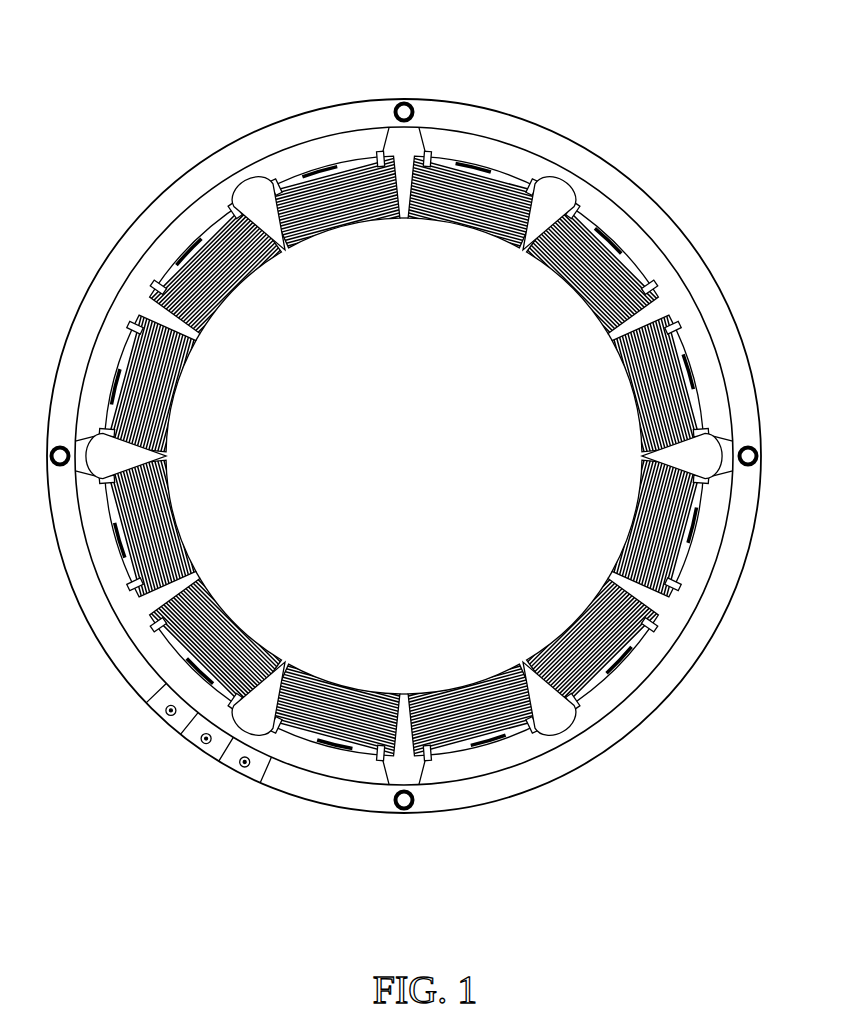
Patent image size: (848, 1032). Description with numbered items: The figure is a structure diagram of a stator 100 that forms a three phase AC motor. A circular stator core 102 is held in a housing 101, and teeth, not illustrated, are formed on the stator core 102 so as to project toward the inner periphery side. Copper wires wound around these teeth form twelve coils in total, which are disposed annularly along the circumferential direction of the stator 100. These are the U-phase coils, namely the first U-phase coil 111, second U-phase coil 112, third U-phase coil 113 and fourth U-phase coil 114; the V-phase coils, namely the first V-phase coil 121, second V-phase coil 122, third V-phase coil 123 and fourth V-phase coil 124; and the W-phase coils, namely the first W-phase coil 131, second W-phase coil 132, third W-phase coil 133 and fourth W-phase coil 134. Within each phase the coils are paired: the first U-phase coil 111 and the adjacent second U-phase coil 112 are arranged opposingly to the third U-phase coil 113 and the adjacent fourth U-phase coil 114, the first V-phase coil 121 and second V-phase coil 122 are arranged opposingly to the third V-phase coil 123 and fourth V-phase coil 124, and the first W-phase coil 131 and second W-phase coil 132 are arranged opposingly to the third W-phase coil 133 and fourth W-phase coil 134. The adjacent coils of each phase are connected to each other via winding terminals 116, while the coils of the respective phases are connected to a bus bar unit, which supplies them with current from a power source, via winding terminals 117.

The stator 100 is at (400, 459).
The housing 101 is at (601, 170).
The stator core 102 is at (288, 160).
The first U-phase coil 111 is at (230, 297).
The second U-phase coil 112 is at (345, 237).
The third U-phase coil 113 is at (576, 612).
The fourth U-phase coil 114 is at (466, 680).
The first V-phase coil 121 is at (452, 232).
The second V-phase coil 122 is at (573, 292).
The third V-phase coil 123 is at (338, 677).
The fourth V-phase coil 124 is at (233, 610).
The first W-phase coil 131 is at (630, 392).
The second W-phase coil 132 is at (626, 516).
The third W-phase coil 133 is at (196, 516).
The fourth W-phase coil 134 is at (200, 400).
The winding terminal 116 is at (284, 233).
The winding terminal 117 is at (426, 152).